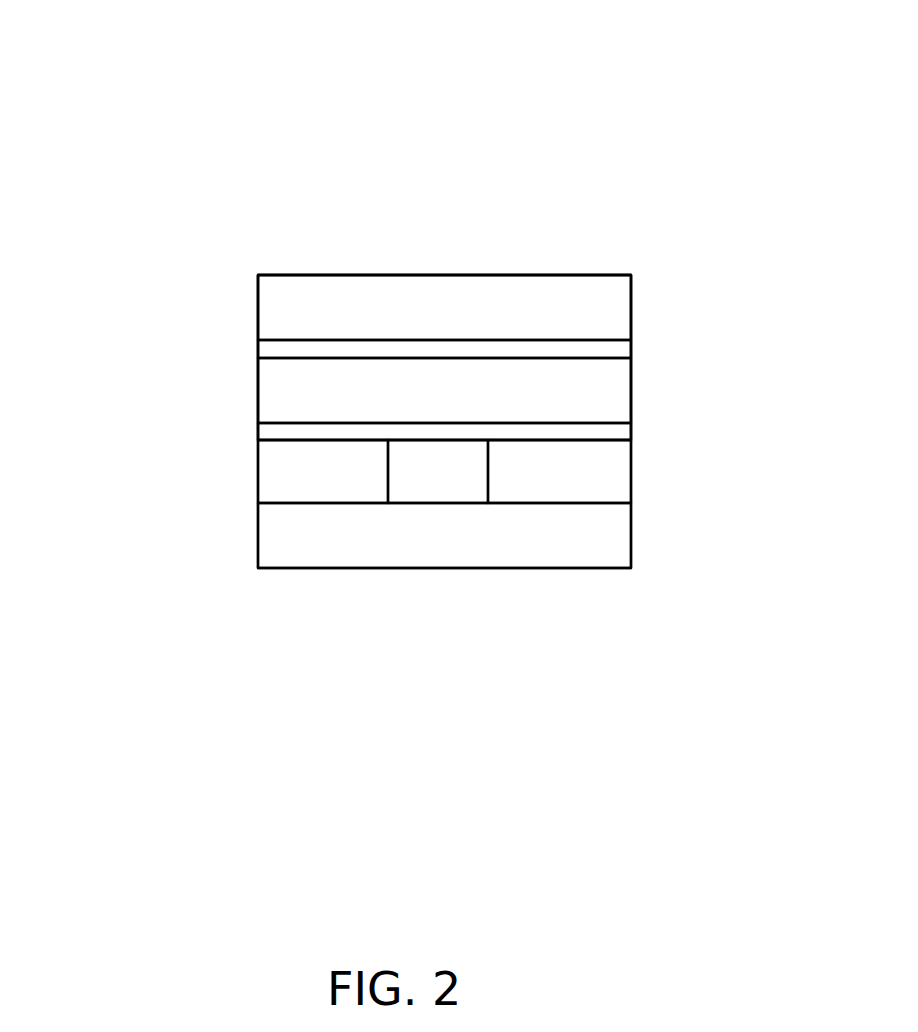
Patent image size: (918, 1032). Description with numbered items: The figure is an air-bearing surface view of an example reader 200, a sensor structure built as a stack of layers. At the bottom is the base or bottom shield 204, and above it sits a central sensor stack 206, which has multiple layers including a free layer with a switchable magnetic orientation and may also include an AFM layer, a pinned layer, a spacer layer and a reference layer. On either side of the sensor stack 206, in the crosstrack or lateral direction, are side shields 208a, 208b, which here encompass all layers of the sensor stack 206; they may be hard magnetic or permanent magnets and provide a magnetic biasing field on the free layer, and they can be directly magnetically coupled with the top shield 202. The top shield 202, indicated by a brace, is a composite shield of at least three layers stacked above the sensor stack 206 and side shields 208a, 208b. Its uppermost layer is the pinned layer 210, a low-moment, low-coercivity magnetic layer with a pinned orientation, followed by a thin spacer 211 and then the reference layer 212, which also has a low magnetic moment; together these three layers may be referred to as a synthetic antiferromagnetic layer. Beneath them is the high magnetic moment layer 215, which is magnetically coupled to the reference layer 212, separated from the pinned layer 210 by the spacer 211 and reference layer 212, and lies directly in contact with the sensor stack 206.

The reader 200 is at (165, 76).
The top shield 202 is at (247, 277).
The bottom shield 204 is at (258, 535).
The sensor stack 206 is at (437, 503).
The side shield 208a is at (258, 475).
The side shield 208b is at (631, 475).
The pinned layer 210 is at (631, 297).
The spacer 211 is at (631, 345).
The reference layer 212 is at (631, 385).
The high magnetic moment (HMM) layer 215 is at (631, 430).